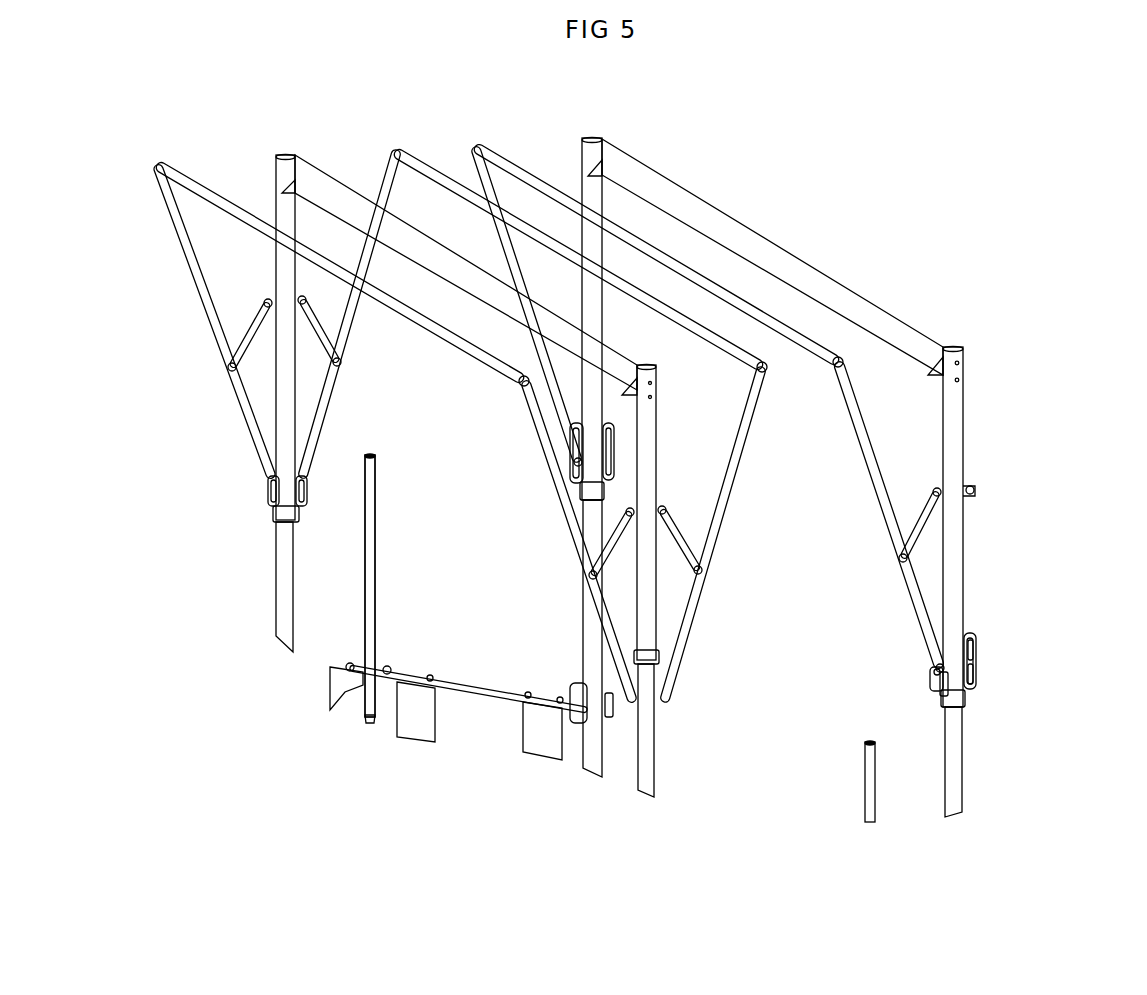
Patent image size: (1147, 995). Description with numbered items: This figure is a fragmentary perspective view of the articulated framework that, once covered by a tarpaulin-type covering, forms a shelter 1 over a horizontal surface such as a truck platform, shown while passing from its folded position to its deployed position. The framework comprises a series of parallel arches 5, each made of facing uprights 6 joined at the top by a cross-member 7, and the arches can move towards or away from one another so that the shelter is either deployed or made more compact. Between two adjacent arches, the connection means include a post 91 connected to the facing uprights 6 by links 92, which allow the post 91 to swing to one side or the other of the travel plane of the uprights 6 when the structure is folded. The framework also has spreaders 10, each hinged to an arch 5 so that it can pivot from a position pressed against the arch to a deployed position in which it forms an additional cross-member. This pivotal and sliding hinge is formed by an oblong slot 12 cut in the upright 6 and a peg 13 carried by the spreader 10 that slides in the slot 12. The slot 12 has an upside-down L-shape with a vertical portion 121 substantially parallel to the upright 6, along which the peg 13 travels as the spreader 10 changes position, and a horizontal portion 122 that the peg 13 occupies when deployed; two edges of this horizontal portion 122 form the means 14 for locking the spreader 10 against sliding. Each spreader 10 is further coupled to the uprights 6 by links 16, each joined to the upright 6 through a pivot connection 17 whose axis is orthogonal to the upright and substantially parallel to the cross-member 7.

The shelter 1 is at (1057, 695).
The arch 5 is at (957, 423).
The upright 6 is at (957, 600).
The cross-member 7 is at (823, 283).
The spreader 10 is at (910, 588).
The oblong slot 12 is at (933, 688).
The peg 13 is at (933, 671).
The means for locking sliding movement 14 is at (973, 628).
The link 16 is at (923, 527).
The pivot connection 17 is at (963, 508).
The post 91 is at (363, 600).
The link 92 is at (453, 683).
The vertical portion 121 is at (975, 695).
The horizontal portion 122 is at (974, 668).